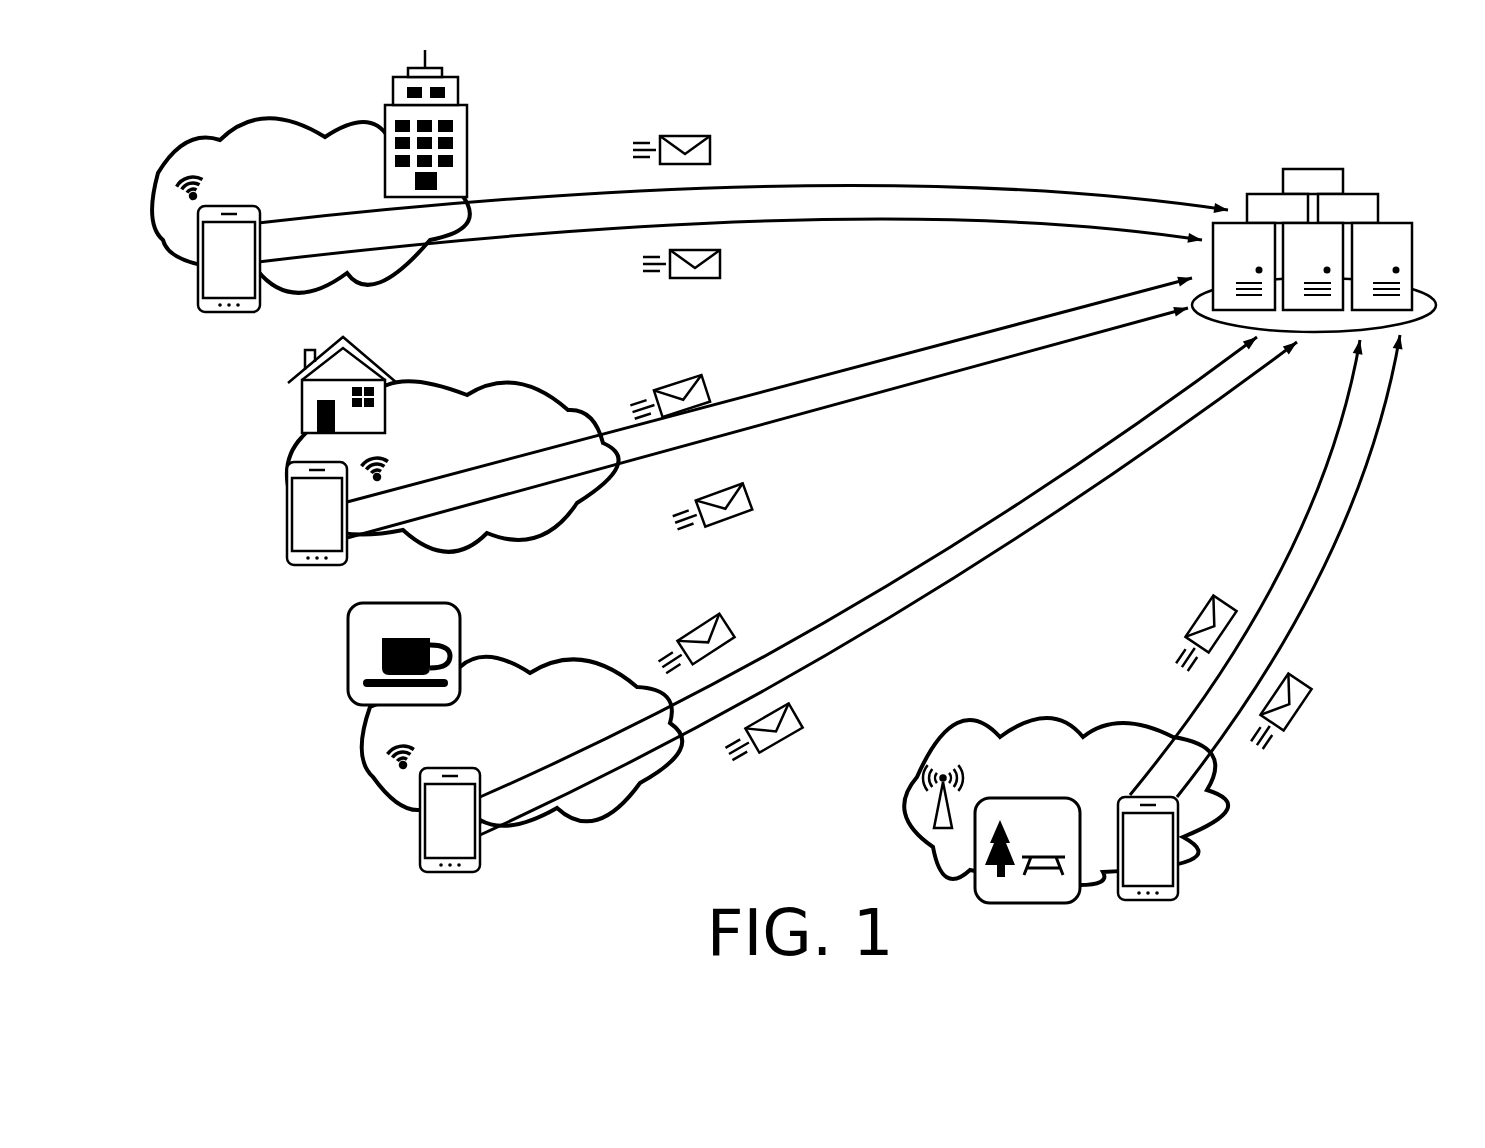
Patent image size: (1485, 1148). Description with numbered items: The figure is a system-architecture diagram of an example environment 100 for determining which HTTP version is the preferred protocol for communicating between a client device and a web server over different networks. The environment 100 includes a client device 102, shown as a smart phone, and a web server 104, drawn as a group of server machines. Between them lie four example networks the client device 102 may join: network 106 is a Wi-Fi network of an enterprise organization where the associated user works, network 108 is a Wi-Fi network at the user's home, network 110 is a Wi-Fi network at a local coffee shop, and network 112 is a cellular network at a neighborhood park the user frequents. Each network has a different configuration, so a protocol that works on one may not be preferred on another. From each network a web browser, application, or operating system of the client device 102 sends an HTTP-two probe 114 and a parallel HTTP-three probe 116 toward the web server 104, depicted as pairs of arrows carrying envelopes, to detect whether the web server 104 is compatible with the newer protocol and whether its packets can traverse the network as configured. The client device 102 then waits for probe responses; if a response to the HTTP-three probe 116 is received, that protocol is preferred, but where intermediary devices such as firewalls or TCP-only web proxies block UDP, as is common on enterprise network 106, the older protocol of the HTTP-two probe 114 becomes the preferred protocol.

The environment 100 is at (175, 90).
The client device 102 is at (732, 553).
The web server 104 is at (1329, 219).
The network 106 is at (311, 171).
The network 108 is at (453, 444).
The network 110 is at (515, 715).
The network 112 is at (1066, 810).
The HTTP/2 probe 114 is at (723, 147).
The HTTP/3 probe 116 is at (735, 270).